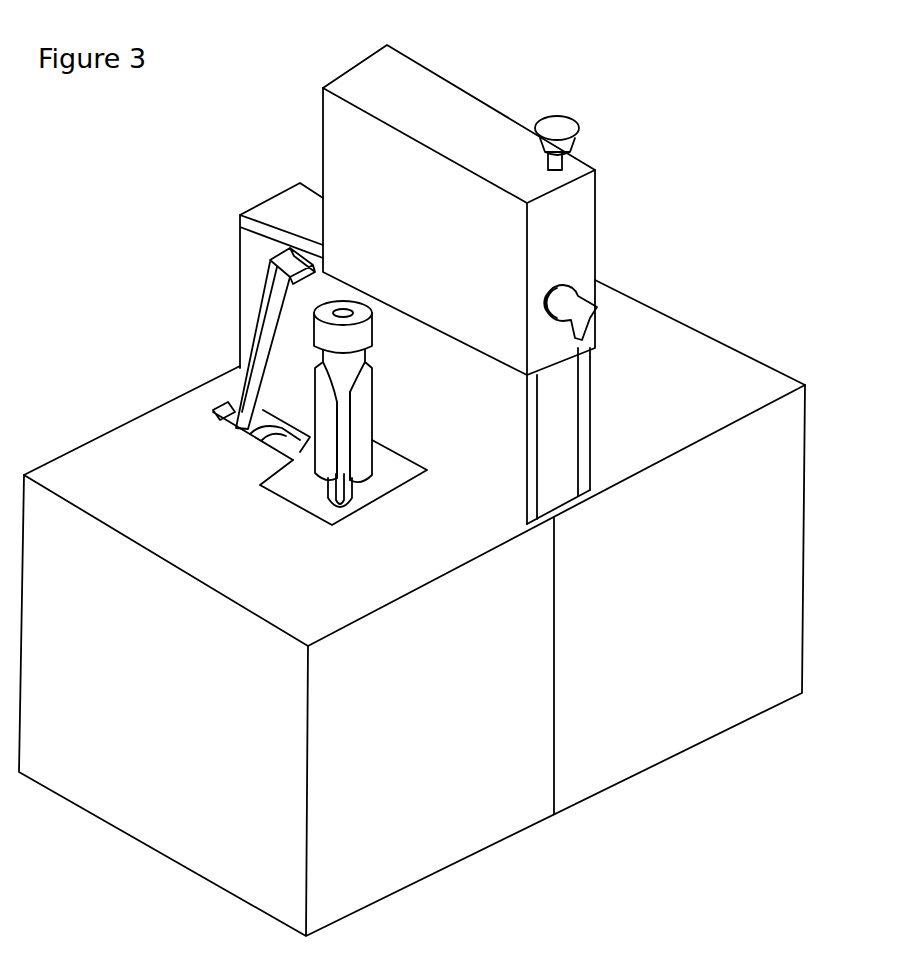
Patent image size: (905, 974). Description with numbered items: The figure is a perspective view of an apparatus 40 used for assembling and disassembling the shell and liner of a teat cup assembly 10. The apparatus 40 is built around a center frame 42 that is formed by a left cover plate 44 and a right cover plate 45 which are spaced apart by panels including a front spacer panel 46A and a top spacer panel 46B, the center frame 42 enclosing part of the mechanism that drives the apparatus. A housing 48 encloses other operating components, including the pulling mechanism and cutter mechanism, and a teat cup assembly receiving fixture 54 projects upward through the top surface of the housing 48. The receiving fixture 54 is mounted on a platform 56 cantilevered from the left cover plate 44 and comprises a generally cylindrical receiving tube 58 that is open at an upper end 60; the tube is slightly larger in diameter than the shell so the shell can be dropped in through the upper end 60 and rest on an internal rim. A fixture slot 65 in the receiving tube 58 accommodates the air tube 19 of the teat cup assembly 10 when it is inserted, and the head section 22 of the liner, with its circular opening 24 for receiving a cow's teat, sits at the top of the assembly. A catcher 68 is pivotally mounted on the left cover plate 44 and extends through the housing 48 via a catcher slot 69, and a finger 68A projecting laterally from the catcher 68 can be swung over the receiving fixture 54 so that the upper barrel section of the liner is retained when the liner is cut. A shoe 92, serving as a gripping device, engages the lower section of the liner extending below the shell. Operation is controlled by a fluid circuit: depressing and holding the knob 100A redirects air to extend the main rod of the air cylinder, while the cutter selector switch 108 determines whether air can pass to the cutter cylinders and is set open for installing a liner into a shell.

The teat cup assembly 10 is at (323, 304).
The air tube 19 is at (344, 500).
The head section 22 is at (373, 333).
The circular opening 24 is at (343, 313).
The apparatus 40 is at (124, 403).
The center frame 42 is at (593, 469).
The left cover plate 44 is at (494, 480).
The right cover plate 45 is at (318, 192).
The front spacer panel 46A is at (559, 458).
The top spacer panel 46B is at (287, 213).
The housing 48 is at (440, 833).
The teat cup assembly receiving fixture 54 is at (376, 403).
The platform 56 is at (303, 498).
The receiving tube 58 is at (360, 448).
The upper end 60 is at (364, 387).
The fixture slot 65 is at (340, 398).
The catcher 68 is at (264, 357).
The finger 68A is at (282, 258).
The catcher slot 69 is at (217, 412).
The shoe 92 is at (266, 452).
The knob 100A is at (557, 128).
The cutter selector switch 108 is at (583, 313).